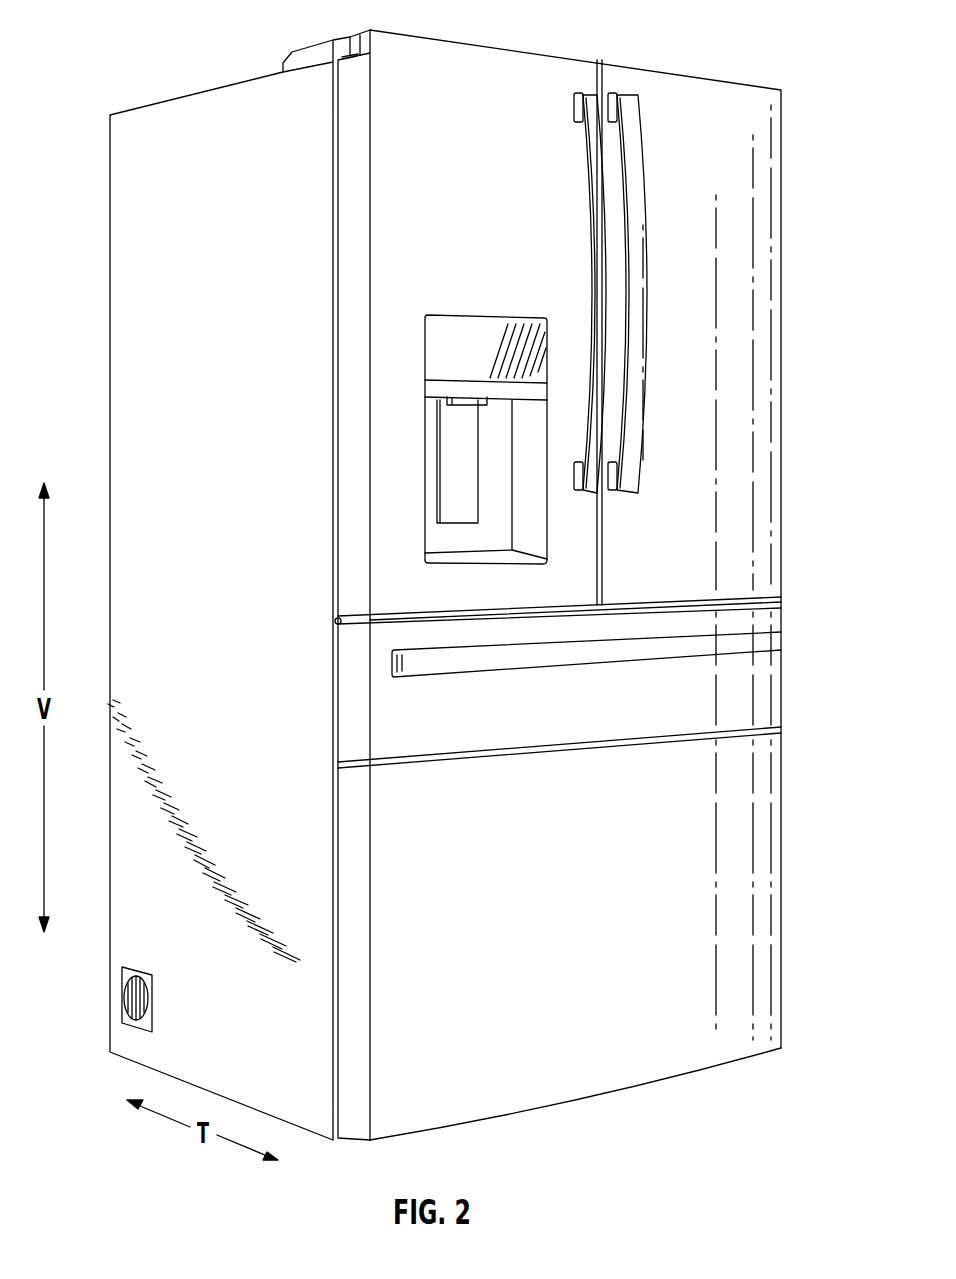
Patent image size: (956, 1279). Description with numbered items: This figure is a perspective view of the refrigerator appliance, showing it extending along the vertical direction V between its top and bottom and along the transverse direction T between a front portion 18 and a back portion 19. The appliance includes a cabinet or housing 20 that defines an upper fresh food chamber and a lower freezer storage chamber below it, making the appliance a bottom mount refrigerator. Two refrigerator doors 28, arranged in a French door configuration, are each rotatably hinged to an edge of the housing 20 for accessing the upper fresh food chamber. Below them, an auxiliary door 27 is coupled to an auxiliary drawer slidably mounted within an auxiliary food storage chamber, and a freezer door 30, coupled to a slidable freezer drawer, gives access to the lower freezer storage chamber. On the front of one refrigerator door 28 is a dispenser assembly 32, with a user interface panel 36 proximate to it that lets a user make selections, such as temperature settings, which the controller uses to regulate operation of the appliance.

The front portion 18 is at (439, 576).
The back portion 19 is at (103, 950).
The cabinet or housing 20 is at (133, 220).
The auxiliary door 27 is at (768, 693).
The refrigerator doors 28 is at (433, 55).
The freezer door 30 is at (768, 880).
The dispenser assembly 32 is at (440, 478).
The user interface panel 36 is at (405, 404).